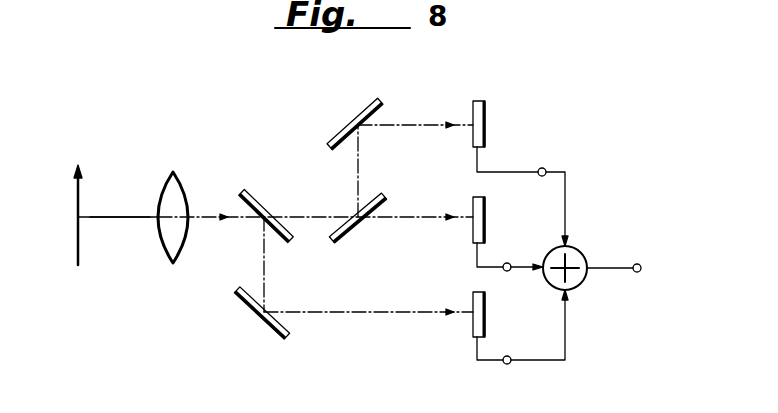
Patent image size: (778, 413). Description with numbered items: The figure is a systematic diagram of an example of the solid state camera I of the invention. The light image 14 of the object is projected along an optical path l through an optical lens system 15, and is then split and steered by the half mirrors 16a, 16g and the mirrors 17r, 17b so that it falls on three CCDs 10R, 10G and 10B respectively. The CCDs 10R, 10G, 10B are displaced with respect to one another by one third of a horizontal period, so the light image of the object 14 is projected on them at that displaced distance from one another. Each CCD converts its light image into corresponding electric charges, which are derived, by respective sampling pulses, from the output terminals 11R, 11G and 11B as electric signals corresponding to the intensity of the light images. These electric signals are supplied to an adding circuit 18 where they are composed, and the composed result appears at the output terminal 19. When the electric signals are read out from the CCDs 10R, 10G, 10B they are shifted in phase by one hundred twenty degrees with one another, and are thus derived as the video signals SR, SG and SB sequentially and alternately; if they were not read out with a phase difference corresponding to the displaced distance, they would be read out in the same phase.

The light image of the object 14 is at (78, 200).
The optical lens system 15 is at (183, 188).
The optical path l is at (133, 220).
The solid state camera I is at (310, 97).
The half mirror 16a is at (264, 203).
The half mirror 16g is at (353, 234).
The mirror 17r is at (376, 104).
The mirror 17b is at (265, 333).
The CCD 10R is at (486, 115).
The CCD 10G is at (486, 230).
The CCD 10B is at (486, 337).
The output terminal 11R is at (543, 168).
The output terminal 11G is at (508, 262).
The output terminal 11B is at (508, 366).
The adding circuit 18 is at (584, 257).
The output terminal 19 is at (637, 272).
The video signal SR is at (575, 222).
The video signal SG is at (537, 277).
The video signal SB is at (575, 318).